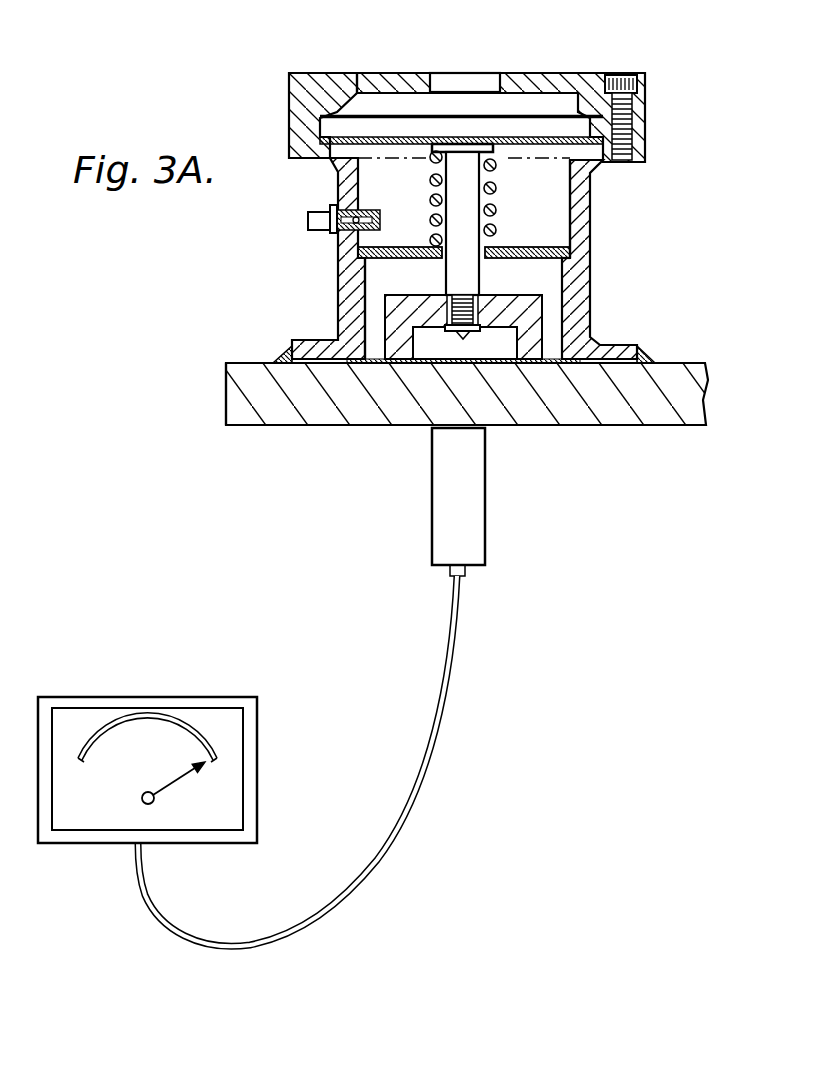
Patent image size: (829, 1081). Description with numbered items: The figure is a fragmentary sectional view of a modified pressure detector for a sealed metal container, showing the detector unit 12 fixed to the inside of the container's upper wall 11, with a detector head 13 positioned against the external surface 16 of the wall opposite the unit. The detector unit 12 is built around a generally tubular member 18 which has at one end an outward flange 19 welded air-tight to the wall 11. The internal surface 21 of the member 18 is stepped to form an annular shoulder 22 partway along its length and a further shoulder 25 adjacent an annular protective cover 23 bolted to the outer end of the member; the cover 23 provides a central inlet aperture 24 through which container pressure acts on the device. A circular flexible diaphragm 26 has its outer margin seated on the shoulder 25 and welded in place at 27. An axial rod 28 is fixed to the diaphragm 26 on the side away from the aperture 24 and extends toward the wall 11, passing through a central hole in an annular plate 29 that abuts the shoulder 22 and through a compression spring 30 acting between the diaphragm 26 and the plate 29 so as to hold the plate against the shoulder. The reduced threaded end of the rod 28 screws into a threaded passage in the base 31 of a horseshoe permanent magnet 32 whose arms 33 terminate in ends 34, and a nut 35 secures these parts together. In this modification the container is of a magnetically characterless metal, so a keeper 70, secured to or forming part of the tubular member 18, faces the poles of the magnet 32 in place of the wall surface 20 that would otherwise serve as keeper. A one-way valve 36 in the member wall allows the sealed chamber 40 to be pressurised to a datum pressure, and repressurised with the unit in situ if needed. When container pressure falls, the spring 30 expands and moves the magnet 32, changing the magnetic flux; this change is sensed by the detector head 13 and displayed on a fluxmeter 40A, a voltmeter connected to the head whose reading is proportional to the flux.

The upper wall 11 is at (292, 368).
The detector unit 12 is at (658, 158).
The detector head 13 is at (465, 500).
The external surface 16 is at (236, 427).
The tubular member 18 is at (580, 246).
The outward flange 19 is at (612, 348).
The wall surface 20 is at (673, 366).
The internal surface 21 is at (557, 200).
The annular shoulder 22 is at (567, 228).
The annular protective cover 23 is at (583, 88).
The inlet aperture 24 is at (465, 64).
The shoulder 25 is at (338, 112).
The flexible diaphragm 26 is at (505, 145).
The weld 27 is at (588, 128).
The axial rod 28 is at (457, 267).
The annular plate 29 is at (540, 268).
The compression spring 30 is at (433, 178).
The base 31 is at (438, 318).
The horseshoe permanent magnet 32 is at (533, 307).
The arms 33 is at (345, 368).
The ends 34 is at (400, 340).
The nut 35 is at (470, 330).
The one-way valve 36 is at (308, 220).
The sealed chamber 40 is at (410, 226).
The fluxmeter 40A is at (258, 757).
The keeper 70 is at (515, 362).